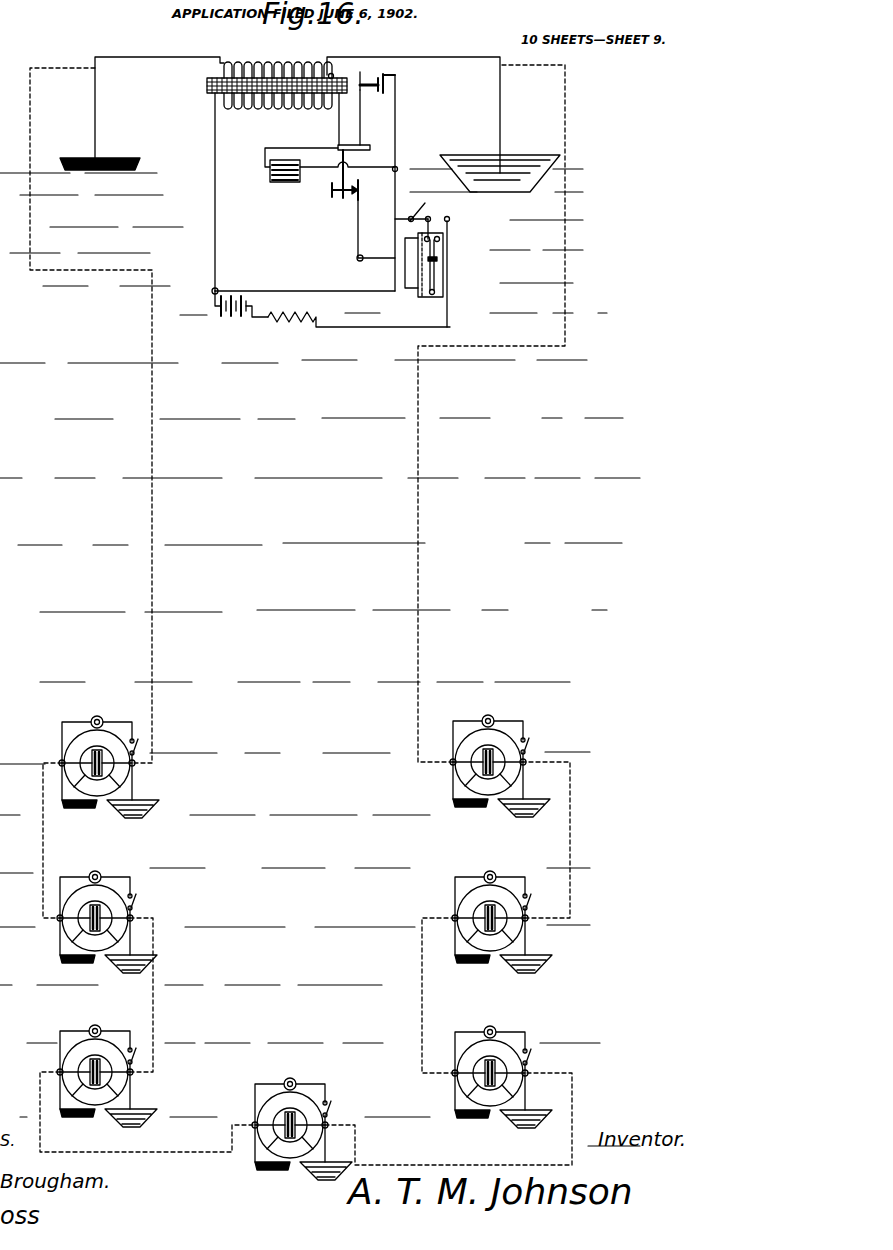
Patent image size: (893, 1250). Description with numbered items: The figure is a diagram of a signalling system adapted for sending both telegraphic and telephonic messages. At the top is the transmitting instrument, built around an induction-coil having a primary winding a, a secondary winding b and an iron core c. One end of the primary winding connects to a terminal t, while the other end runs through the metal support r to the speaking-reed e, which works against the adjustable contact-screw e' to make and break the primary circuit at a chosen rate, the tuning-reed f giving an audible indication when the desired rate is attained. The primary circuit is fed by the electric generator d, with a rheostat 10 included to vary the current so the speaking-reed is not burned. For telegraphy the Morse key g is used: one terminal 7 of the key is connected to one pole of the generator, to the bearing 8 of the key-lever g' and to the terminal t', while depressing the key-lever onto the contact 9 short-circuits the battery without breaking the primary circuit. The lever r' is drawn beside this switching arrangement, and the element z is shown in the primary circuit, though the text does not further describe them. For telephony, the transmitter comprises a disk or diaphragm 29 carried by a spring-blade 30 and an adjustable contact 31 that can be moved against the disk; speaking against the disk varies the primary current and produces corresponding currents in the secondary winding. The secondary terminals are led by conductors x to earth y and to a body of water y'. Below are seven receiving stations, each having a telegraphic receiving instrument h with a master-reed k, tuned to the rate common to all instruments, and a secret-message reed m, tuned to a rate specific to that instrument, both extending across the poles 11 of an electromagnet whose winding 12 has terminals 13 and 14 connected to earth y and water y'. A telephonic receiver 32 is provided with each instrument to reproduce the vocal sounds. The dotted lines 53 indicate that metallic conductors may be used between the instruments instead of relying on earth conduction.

The conductors x is at (297, 101).
The earth y is at (306, 673).
The body of water y' is at (328, 994).
The primary winding a is at (278, 56).
The secondary winding b is at (304, 108).
The iron core c is at (207, 91).
The terminal t is at (303, 193).
The speaking-reed e is at (377, 71).
The contact-screw e' is at (373, 93).
The tuning-reed f is at (362, 122).
The metal support r is at (358, 157).
The battery cell z is at (273, 185).
The adjustable contact 31 is at (338, 197).
The disk or diaphragm 29 is at (373, 191).
The spring-blade 30 is at (358, 240).
The electric generator d is at (241, 318).
The rheostat 10 is at (359, 328).
The switch lever r' is at (413, 204).
The second terminal t' is at (455, 263).
The terminal of the key 7 is at (443, 233).
The Morse key g is at (406, 265).
The bearing of the key-lever 8 is at (437, 259).
The key-lever g' is at (413, 300).
The contact 9 is at (430, 306).
The dotted lines 53 is at (418, 515).
The telephonic receiver 32 is at (291, 893).
The winding 12 is at (284, 938).
The poles 11 is at (305, 941).
The terminal 13 is at (259, 946).
The terminal 14 is at (326, 951).
The receiving instrument h is at (322, 922).
The master-reed k is at (269, 967).
The secret-message reed m is at (312, 967).